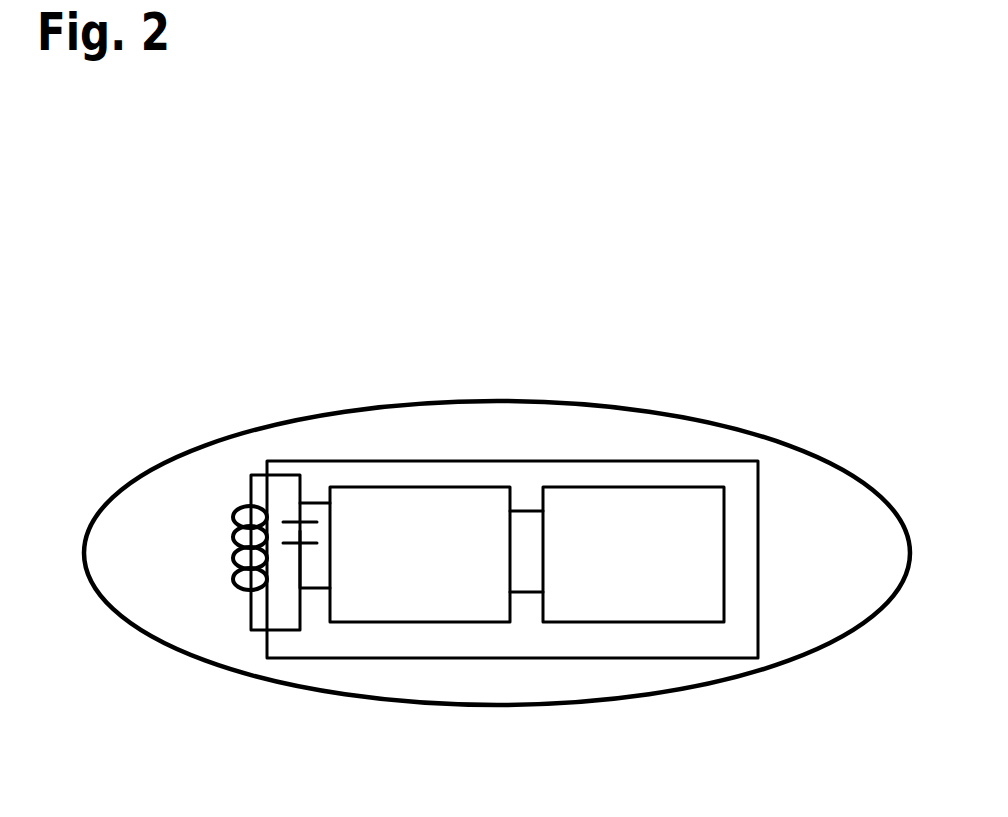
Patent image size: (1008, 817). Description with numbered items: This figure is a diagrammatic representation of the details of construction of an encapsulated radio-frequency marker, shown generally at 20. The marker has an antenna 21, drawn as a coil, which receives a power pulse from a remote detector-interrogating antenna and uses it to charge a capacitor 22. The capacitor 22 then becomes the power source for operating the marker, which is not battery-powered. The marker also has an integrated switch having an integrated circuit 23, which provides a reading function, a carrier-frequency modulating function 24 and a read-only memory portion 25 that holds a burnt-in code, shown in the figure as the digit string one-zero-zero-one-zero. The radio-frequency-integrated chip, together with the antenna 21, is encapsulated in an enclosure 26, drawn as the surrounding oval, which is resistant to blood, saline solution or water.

The radio-frequency marker 20 is at (625, 323).
The antenna 21 is at (233, 573).
The capacitor 22 is at (300, 588).
The integrated circuit 23 is at (527, 660).
The carrier-frequency modulating function 24 is at (397, 533).
The read-only memory portion 25 is at (577, 533).
The enclosure 26 is at (408, 403).